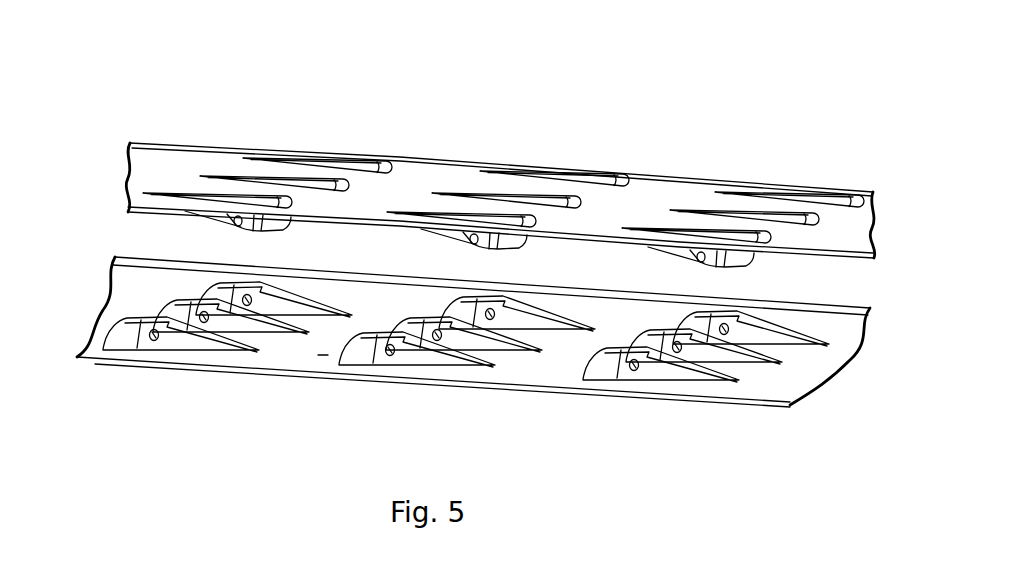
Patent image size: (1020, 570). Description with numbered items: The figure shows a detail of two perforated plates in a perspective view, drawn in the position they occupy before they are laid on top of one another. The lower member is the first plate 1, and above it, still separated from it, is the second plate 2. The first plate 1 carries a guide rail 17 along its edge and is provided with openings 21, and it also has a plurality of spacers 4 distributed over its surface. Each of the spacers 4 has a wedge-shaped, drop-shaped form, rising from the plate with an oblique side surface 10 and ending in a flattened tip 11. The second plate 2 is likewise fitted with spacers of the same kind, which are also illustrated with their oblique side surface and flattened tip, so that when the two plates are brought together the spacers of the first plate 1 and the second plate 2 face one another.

The first plate 1 is at (468, 362).
The second plate 2 is at (473, 168).
The spacers 4 is at (463, 298).
The oblique side surface 10 is at (687, 365).
The flattened tip 11 is at (607, 351).
The guide rail 17 is at (847, 318).
The openings 21 is at (153, 338).